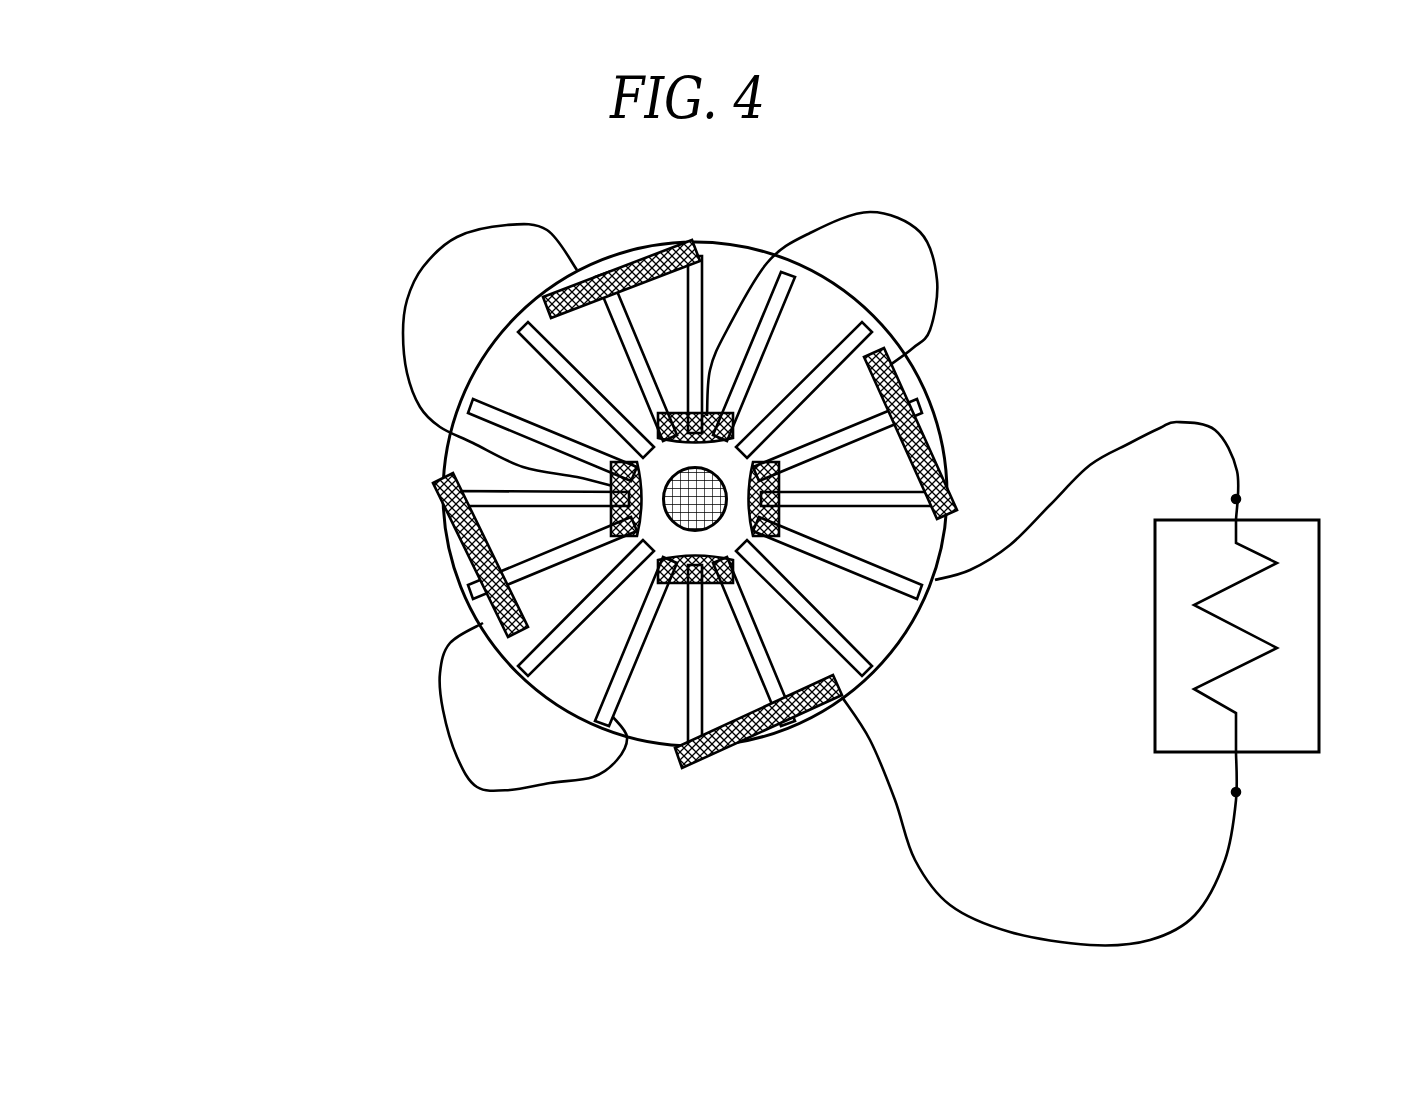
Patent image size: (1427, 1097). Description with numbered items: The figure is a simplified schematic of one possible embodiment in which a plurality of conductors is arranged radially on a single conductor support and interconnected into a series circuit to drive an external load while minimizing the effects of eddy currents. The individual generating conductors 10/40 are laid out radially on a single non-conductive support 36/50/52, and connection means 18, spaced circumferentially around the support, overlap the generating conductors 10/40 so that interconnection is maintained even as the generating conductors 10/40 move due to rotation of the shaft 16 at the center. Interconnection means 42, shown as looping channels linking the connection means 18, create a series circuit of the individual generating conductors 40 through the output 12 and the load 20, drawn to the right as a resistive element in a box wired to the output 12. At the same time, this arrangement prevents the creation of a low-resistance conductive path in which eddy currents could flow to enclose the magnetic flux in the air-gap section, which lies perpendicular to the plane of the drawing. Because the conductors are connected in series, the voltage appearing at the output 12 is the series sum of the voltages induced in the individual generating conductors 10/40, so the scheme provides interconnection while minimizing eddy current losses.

The generating conductor 10 is at (599, 504).
The generating conductor 40 is at (553, 657).
The output 12 is at (1177, 420).
The shaft 16 is at (666, 477).
The connection means 18 is at (612, 478).
The load 20 is at (1290, 518).
The non-conductive support 36 is at (509, 494).
The non-conductive support 50 is at (509, 494).
The non-conductive support 52 is at (452, 581).
The interconnection means 42 is at (497, 218).